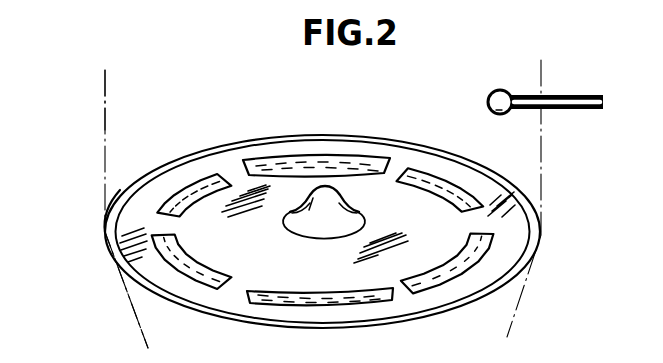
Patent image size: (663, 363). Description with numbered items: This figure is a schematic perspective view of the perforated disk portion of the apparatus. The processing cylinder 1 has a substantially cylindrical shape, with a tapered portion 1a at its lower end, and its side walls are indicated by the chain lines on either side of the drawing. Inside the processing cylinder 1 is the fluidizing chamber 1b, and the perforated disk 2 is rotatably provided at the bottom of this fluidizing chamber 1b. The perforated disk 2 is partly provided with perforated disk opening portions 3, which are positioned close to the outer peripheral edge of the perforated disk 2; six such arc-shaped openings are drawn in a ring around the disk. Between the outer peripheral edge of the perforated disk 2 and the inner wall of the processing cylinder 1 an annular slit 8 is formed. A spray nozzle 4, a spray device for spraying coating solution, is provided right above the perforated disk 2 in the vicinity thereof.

The processing cylinder 1 is at (543, 162).
The tapered portion 1a is at (130, 305).
The fluidizing chamber 1b is at (130, 133).
The perforated disk 2 is at (397, 161).
The perforated disk opening portions 3 is at (493, 233).
The spray nozzle 4 is at (500, 90).
The annular slit 8 is at (108, 228).